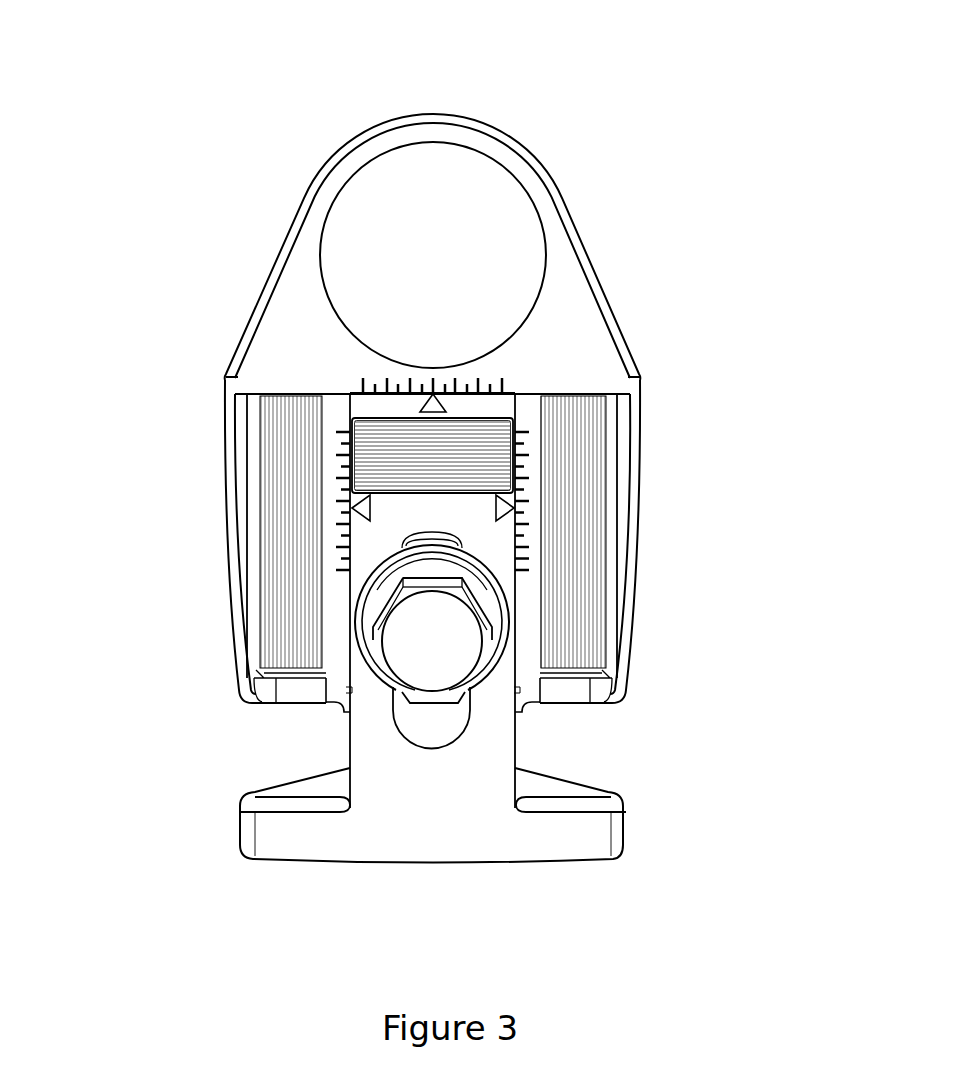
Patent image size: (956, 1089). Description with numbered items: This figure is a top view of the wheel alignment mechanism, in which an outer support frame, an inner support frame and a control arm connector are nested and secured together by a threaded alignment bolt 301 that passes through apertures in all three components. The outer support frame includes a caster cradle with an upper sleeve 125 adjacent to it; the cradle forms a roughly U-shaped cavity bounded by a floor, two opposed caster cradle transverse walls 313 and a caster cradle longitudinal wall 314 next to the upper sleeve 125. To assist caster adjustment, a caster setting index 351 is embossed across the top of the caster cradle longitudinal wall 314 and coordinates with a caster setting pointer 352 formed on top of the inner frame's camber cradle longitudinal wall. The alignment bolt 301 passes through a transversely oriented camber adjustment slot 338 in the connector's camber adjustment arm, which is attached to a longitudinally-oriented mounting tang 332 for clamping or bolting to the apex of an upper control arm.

The upper sleeve 125 is at (432, 135).
The alignment bolt 301 is at (458, 656).
The caster cradle transverse walls 313 is at (249, 496).
The caster cradle longitudinal wall 314 is at (610, 396).
The mounting tang 332 is at (627, 827).
The camber adjustment slot 338 is at (430, 737).
The caster setting index 351 is at (373, 378).
The caster setting pointer 352 is at (428, 398).